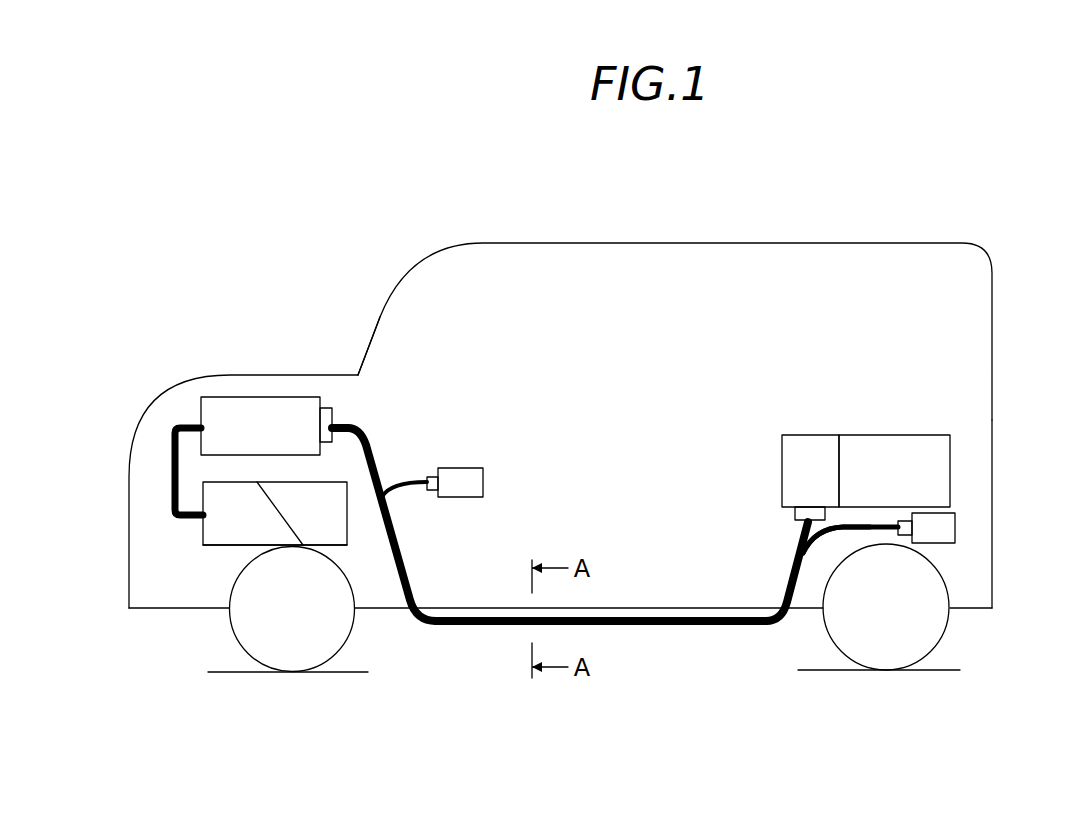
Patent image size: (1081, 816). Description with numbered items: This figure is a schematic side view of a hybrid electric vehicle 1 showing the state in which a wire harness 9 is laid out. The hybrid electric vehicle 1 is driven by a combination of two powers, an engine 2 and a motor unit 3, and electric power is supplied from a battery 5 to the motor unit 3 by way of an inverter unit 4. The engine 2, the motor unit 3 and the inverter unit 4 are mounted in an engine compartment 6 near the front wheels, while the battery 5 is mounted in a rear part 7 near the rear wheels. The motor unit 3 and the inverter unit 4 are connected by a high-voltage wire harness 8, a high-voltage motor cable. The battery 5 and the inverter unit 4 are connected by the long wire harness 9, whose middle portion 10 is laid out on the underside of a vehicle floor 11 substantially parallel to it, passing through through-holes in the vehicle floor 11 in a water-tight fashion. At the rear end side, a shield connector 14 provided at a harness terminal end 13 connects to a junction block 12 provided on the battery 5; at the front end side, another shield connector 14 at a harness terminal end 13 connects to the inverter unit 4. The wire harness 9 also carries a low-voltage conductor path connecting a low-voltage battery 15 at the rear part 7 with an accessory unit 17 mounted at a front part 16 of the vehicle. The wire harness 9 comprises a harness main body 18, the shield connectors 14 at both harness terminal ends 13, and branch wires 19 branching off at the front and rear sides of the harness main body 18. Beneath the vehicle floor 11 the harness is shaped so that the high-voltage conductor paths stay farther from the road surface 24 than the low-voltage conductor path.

The hybrid electric vehicle 1 is at (634, 227).
The engine 2 is at (337, 527).
The motor unit 3 is at (217, 530).
The inverter unit 4 is at (229, 418).
The battery 5 is at (912, 455).
The engine compartment 6 is at (152, 572).
The rear part 7 is at (965, 557).
The high-voltage wire harness 8 is at (170, 478).
The wire harness 9 is at (467, 630).
The middle portion 10 is at (623, 625).
The vehicle floor 11 is at (700, 615).
The junction block 12 is at (820, 455).
The harness terminal end 13 is at (358, 430).
The shield connector 14 is at (337, 408).
The low-voltage battery 15 is at (955, 527).
The front part 16 is at (378, 398).
The accessory unit 17 is at (483, 483).
The harness main body 18 is at (747, 625).
The branch wires 19 is at (398, 488).
The road surface 24 is at (356, 666).